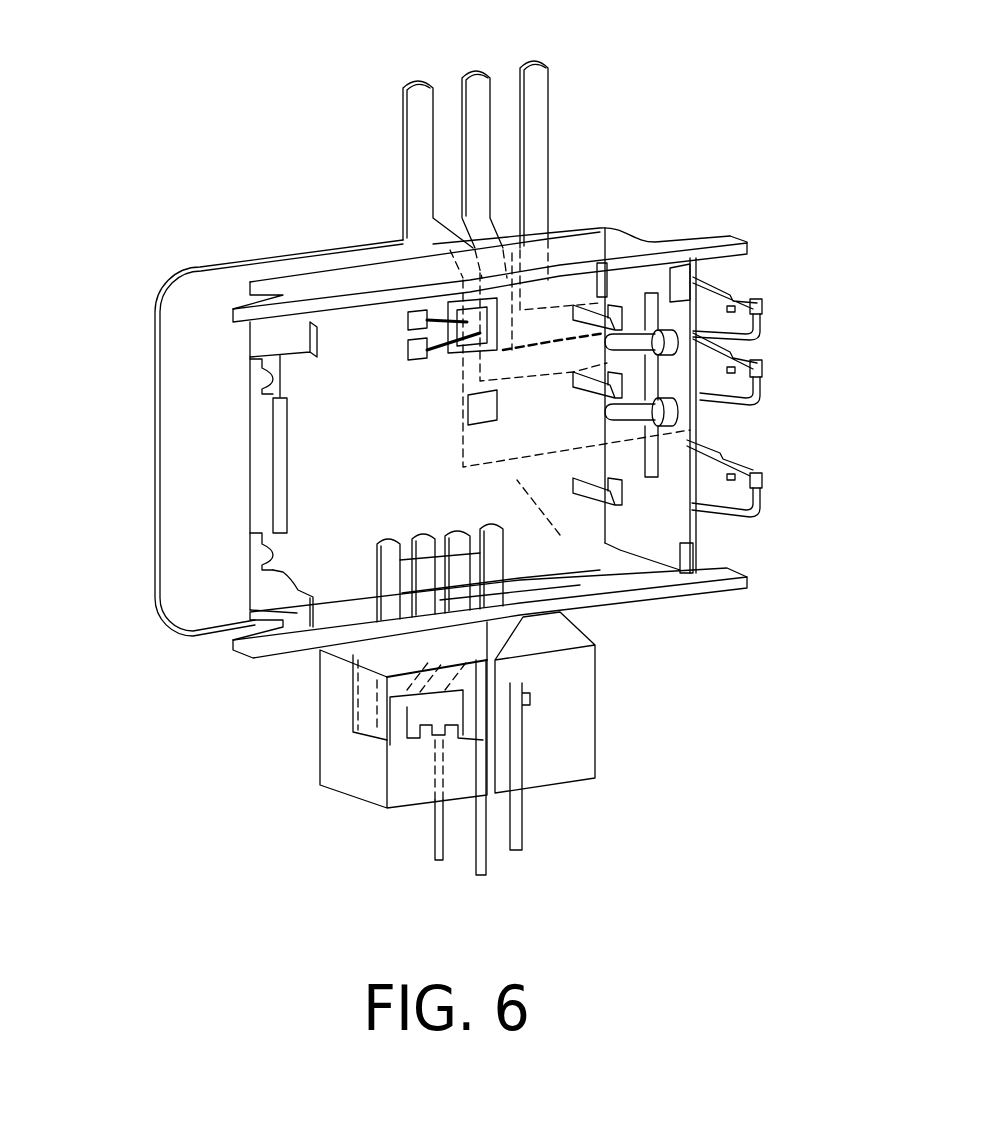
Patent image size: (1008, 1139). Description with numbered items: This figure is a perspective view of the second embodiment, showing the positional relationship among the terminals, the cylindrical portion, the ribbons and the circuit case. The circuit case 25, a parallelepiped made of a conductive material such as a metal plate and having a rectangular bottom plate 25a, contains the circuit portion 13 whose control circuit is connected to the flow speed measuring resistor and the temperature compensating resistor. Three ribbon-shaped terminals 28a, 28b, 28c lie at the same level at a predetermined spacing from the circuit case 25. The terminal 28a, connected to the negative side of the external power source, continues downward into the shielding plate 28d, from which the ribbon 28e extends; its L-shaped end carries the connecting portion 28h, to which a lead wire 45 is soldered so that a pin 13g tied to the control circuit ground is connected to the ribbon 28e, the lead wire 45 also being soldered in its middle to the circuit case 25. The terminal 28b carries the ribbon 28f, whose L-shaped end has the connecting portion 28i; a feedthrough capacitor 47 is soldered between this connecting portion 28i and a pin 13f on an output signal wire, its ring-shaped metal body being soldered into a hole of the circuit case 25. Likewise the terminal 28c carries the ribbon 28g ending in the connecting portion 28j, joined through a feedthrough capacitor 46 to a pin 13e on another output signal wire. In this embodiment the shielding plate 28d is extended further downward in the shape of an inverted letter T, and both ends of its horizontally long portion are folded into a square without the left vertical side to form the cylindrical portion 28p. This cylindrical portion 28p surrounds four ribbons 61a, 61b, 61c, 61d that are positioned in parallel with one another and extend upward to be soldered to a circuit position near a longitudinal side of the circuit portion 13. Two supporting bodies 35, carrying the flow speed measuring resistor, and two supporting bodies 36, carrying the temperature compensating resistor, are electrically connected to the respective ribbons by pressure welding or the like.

The circuit portion 13 is at (300, 457).
The pin 13e is at (600, 297).
The pin 13f is at (660, 433).
The pin 13g is at (690, 562).
The circuit case 25 is at (727, 597).
The bottom plate 25a is at (580, 557).
The terminal 28a is at (416, 80).
The terminal 28b is at (472, 75).
The terminal 28c is at (527, 63).
The shielding plate 28d is at (155, 345).
The ribbon 28e is at (560, 535).
The ribbon 28f is at (552, 278).
The ribbon 28g is at (600, 278).
The connecting portion 28h is at (760, 483).
The connecting portion 28i is at (757, 370).
The connecting portion 28j is at (757, 298).
The cylindrical portion 28p is at (338, 762).
The supporting body 35 is at (515, 675).
The supporting body 36 is at (438, 842).
The lead wire 45 is at (697, 530).
The feedthrough capacitor 46 is at (660, 328).
The feedthrough capacitor 47 is at (690, 419).
The ribbon 61a is at (388, 540).
The ribbon 61b is at (422, 542).
The ribbon 61c is at (455, 538).
The ribbon 61d is at (493, 523).